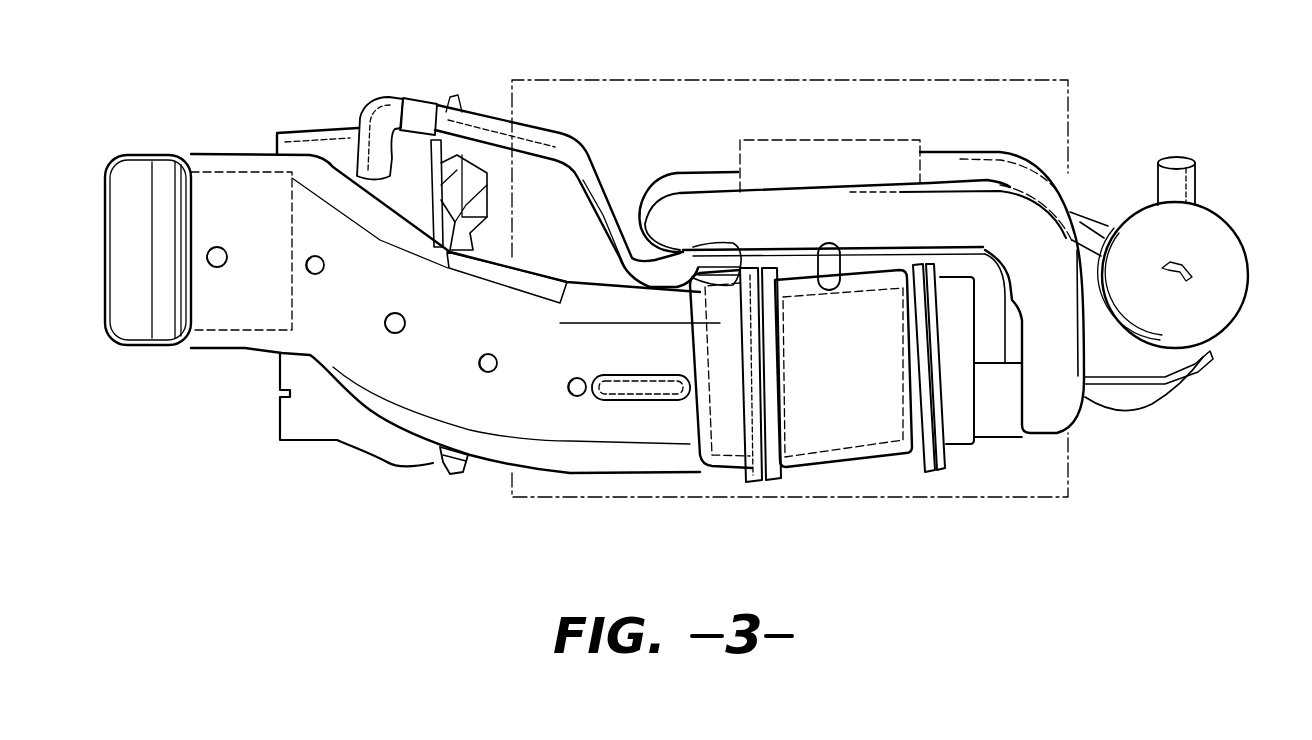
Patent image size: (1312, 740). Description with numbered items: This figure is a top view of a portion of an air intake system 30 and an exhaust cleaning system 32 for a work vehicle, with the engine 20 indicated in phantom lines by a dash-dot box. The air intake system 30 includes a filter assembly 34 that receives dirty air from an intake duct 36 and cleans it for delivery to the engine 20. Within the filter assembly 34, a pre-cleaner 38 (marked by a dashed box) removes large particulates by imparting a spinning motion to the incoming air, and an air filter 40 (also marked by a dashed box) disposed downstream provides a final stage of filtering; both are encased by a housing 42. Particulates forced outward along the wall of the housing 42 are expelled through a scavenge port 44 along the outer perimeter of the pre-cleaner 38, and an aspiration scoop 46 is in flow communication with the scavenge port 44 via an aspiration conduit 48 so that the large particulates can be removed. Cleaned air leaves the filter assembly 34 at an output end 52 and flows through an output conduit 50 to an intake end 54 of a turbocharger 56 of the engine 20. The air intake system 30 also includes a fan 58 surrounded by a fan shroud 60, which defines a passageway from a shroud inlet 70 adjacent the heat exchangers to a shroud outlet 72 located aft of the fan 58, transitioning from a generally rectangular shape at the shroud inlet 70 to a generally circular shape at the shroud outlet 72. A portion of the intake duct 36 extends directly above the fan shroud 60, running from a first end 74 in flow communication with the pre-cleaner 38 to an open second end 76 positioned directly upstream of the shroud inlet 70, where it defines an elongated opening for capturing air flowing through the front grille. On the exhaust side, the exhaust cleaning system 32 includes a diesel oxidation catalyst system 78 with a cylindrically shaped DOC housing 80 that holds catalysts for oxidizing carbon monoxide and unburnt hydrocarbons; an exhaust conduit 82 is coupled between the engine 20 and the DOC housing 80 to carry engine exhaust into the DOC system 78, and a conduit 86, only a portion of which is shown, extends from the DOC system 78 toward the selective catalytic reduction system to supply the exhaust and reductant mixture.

The engine 20 is at (983, 80).
The air intake system 30 is at (268, 497).
The exhaust cleaning system 32 is at (1232, 214).
The filter assembly 34 is at (845, 468).
The intake duct 36 is at (432, 394).
The pre-cleaner 38 is at (722, 458).
The air filter 40 is at (880, 470).
The housing 42 is at (830, 470).
The scavenge port 44 is at (650, 280).
The aspiration scoop 46 is at (386, 112).
The aspiration conduit 48 is at (590, 173).
The output conduit 50 is at (883, 205).
The output end 52 is at (1020, 425).
The intake end 54 is at (732, 183).
The turbocharger 56 is at (770, 140).
The fan 58 is at (480, 212).
The fan shroud 60 is at (307, 132).
The shroud inlet 70 is at (280, 373).
The shroud outlet 72 is at (458, 465).
The first end 74 is at (695, 458).
The second end 76 is at (130, 155).
The diesel oxidation catalyst (DOC) system 78 is at (1130, 356).
The DOC housing 80 is at (1160, 372).
The exhaust conduit 82 is at (966, 152).
The conduit 86 is at (1152, 181).